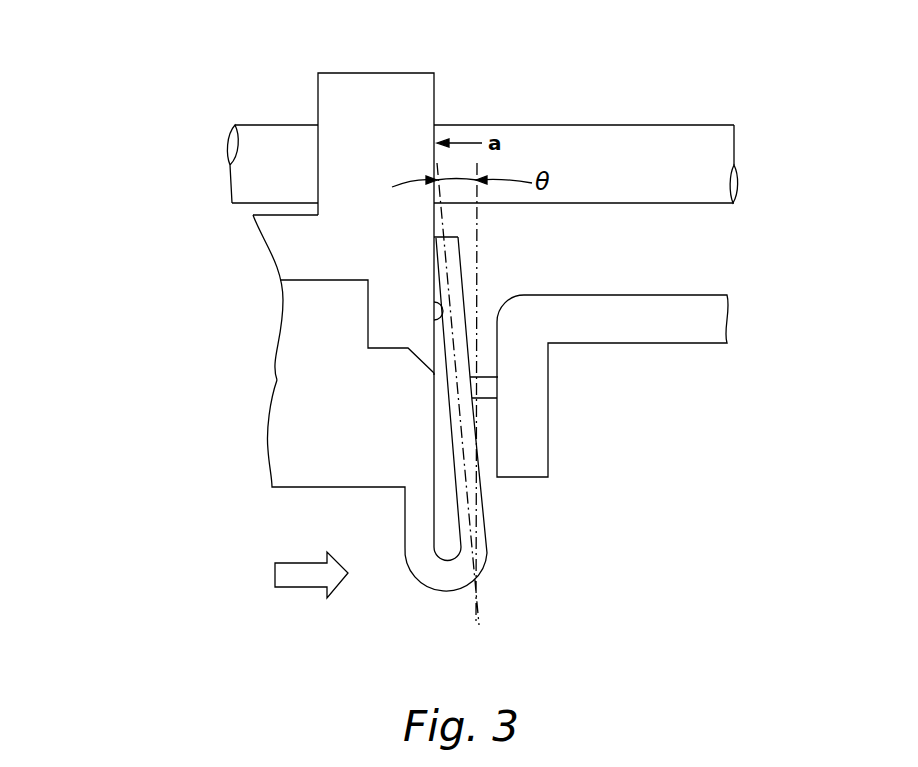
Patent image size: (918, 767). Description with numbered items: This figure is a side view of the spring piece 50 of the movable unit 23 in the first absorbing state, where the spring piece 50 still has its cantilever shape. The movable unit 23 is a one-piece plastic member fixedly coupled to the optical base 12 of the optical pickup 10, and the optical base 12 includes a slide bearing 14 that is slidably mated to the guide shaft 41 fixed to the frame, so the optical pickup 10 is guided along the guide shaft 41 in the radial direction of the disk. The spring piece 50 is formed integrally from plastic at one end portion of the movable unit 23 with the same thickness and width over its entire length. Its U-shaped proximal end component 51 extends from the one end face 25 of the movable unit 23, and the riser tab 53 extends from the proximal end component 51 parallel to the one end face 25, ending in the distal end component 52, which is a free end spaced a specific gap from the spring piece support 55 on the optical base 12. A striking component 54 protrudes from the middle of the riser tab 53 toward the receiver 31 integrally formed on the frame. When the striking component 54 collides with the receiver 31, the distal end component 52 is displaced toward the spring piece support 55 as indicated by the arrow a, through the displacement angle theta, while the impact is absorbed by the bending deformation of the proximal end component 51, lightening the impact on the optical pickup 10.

The optical pickup 10 is at (278, 381).
The optical base 12 is at (277, 256).
The slide bearing 14 is at (376, 82).
The movable unit 23 is at (293, 450).
The one end face 25 is at (436, 459).
The receiver 31 is at (500, 432).
The guide shaft 41 is at (617, 125).
The spring piece 50 is at (510, 432).
The proximal end component 51 is at (445, 584).
The distal end component 52 is at (462, 246).
The riser tab 53 is at (481, 488).
The striking component 54 is at (498, 380).
The spring piece support 55 is at (434, 302).